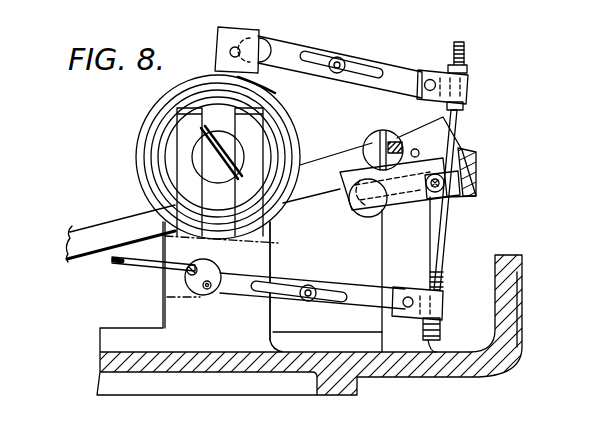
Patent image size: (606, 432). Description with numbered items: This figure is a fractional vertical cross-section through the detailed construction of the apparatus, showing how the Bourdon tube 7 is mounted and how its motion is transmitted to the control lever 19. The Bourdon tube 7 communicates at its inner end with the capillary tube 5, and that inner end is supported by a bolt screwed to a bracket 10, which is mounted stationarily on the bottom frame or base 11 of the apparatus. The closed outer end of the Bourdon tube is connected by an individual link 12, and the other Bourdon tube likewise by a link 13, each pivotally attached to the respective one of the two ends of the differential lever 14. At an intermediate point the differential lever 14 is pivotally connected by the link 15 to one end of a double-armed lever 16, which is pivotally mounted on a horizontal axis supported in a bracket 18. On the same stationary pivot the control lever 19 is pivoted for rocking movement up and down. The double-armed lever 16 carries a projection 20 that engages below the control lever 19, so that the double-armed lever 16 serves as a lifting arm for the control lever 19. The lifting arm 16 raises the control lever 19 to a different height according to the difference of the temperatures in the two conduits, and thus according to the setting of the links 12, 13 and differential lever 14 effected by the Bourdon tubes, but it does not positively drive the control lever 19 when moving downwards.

The capillary tube 5 is at (133, 268).
The Bourdon tube 7 is at (150, 108).
The bracket 10 is at (262, 248).
The base 11 is at (498, 352).
The link 12 is at (362, 64).
The link 13 is at (347, 309).
The differential lever 14 is at (441, 243).
The link 15 is at (447, 191).
The double-armed lever 16 is at (452, 152).
The bracket 18 is at (382, 250).
The control lever 19 is at (92, 235).
The projection 20 is at (352, 209).